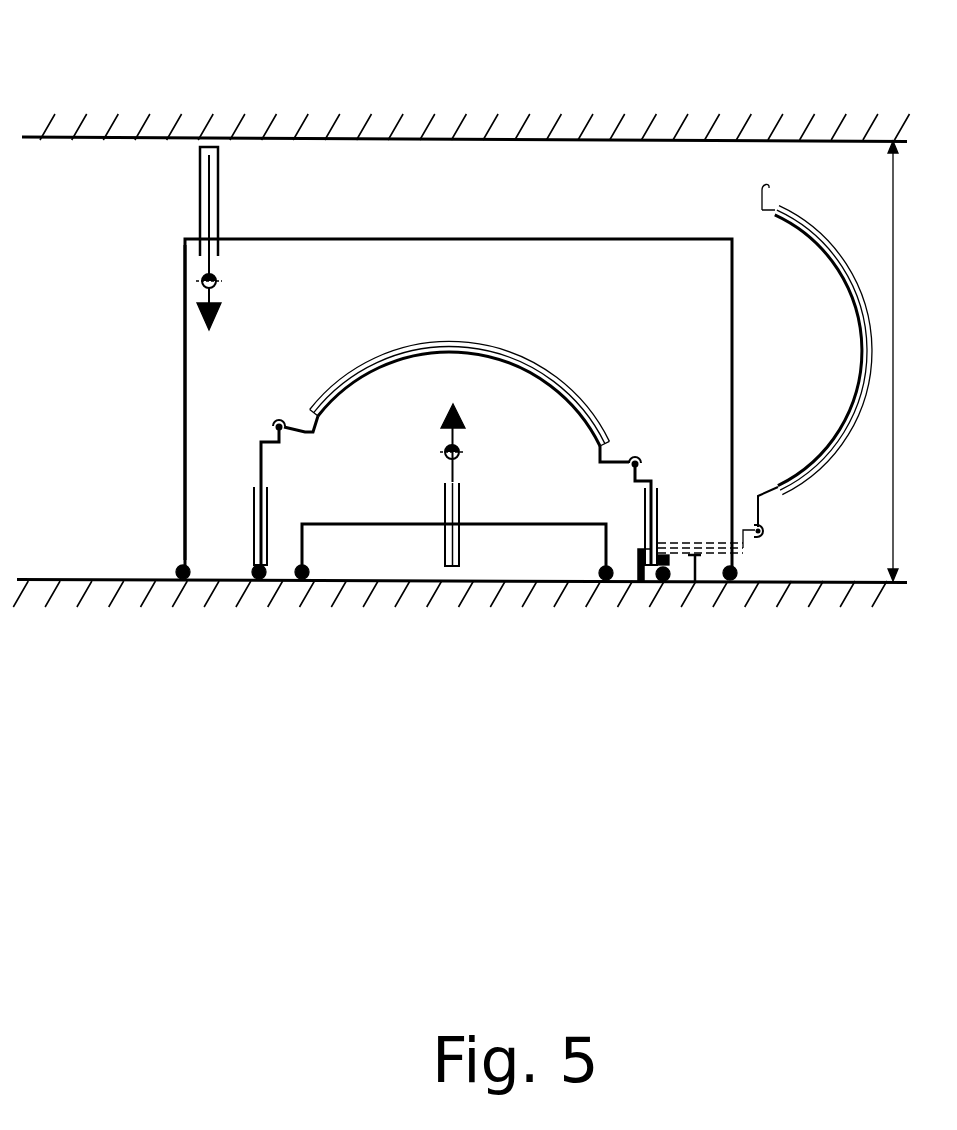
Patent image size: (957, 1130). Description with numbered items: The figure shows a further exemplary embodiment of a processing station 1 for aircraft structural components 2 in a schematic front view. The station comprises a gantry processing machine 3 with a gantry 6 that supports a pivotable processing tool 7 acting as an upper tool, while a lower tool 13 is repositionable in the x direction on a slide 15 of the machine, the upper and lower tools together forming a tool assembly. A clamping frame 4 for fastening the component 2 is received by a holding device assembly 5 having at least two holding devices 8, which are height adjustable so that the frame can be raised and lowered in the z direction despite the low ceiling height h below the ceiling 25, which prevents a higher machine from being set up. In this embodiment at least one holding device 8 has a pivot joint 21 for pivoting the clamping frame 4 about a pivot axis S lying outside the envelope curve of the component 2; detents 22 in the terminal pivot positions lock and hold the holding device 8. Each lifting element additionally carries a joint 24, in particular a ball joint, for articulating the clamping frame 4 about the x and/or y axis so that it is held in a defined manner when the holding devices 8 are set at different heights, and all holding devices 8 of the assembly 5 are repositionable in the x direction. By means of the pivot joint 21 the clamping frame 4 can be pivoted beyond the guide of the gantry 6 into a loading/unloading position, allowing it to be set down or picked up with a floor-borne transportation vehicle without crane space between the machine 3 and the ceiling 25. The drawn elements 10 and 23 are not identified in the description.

The processing station 1 is at (128, 197).
The aircraft structural component 2 is at (362, 362).
The gantry processing machine 3 is at (166, 281).
The clamping frame 4 is at (760, 205).
The holding device assembly 5 is at (252, 432).
The gantry 6 is at (511, 228).
The processing tool 7 is at (216, 318).
The holding device 8 is at (705, 545).
The rod 10 is at (230, 198).
The lower tool 13 is at (460, 416).
The slide 15 is at (379, 525).
The pivot joint 21 is at (662, 583).
The detent 22 is at (640, 582).
The floor 23 is at (68, 583).
The joint 24 is at (636, 456).
The ceiling 25 is at (733, 138).
The pivot axis S is at (668, 566).
The ceiling height h is at (892, 293).